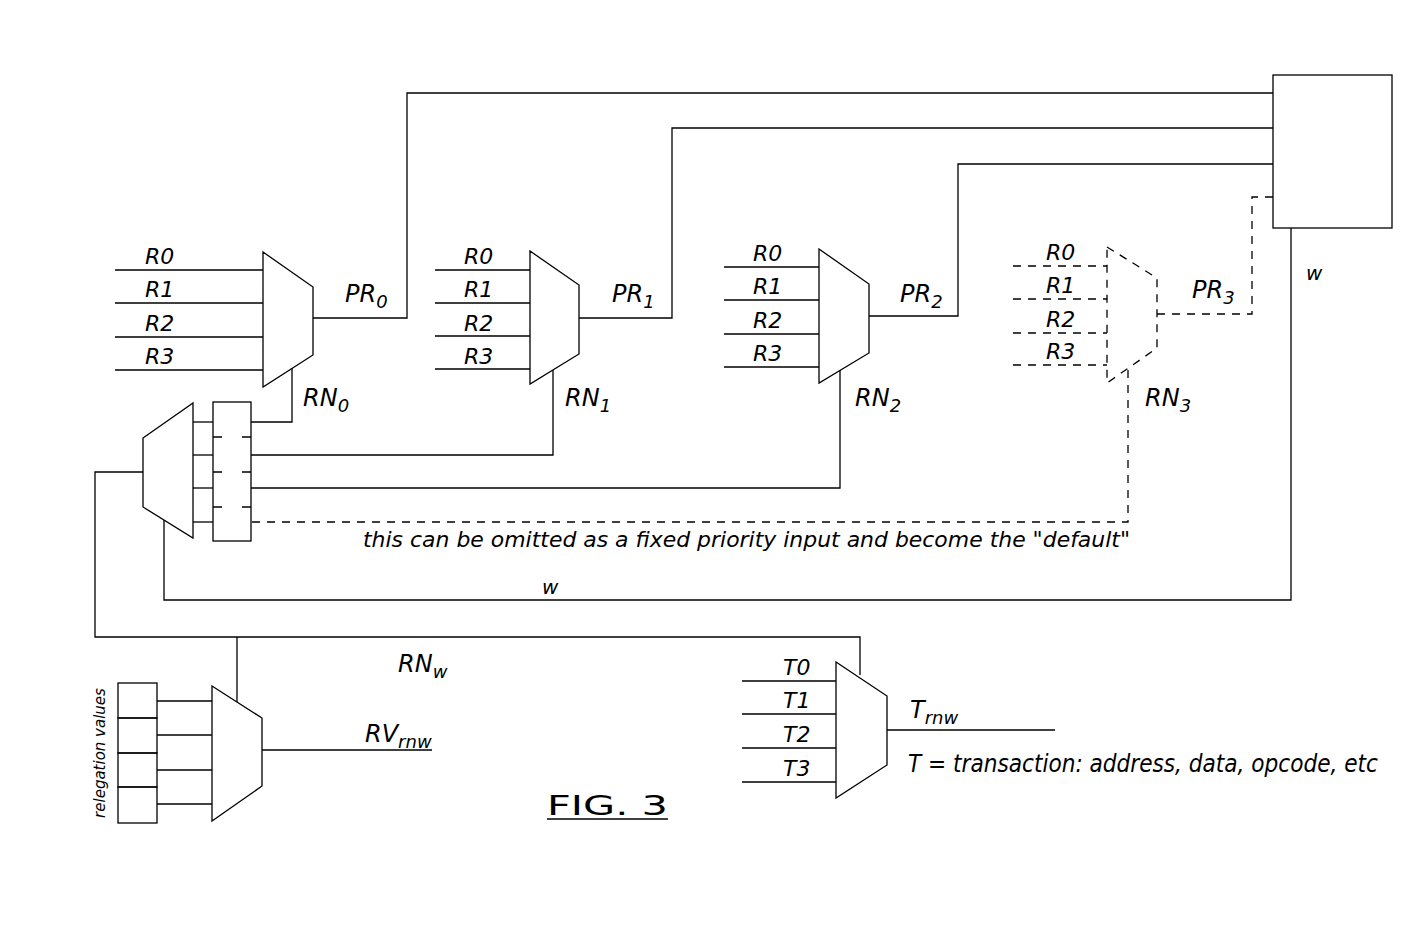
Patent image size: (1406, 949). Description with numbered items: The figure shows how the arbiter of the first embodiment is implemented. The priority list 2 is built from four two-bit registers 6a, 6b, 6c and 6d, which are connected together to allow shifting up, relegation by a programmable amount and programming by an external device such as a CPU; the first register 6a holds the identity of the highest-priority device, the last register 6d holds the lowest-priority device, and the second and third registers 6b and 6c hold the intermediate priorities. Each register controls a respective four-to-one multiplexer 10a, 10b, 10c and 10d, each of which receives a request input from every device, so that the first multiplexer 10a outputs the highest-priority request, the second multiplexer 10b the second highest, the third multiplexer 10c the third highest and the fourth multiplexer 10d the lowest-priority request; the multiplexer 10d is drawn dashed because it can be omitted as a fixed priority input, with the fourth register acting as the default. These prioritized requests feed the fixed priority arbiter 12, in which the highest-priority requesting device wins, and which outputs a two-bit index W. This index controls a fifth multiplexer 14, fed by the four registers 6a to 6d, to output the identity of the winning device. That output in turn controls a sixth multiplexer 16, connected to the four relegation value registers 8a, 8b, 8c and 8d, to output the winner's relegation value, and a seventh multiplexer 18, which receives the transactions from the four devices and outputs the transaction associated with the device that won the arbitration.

The priority list 2 is at (249, 487).
The first register 6a is at (251, 422).
The second register 6b is at (251, 462).
The third register 6c is at (251, 495).
The fourth register 6d is at (233, 535).
The relegation value register 8a is at (127, 693).
The relegation value register 8b is at (135, 737).
The relegation value register 8c is at (135, 773).
The relegation value register 8d is at (135, 807).
The first multiplexer 10a is at (288, 288).
The second multiplexer 10b is at (570, 280).
The third multiplexer 10c is at (850, 277).
The fourth multiplexer 10d is at (1140, 278).
The arbiter 12 is at (1285, 87).
The fifth multiplexer 14 is at (153, 487).
The sixth multiplexer 16 is at (250, 732).
The seventh multiplexer 18 is at (866, 696).